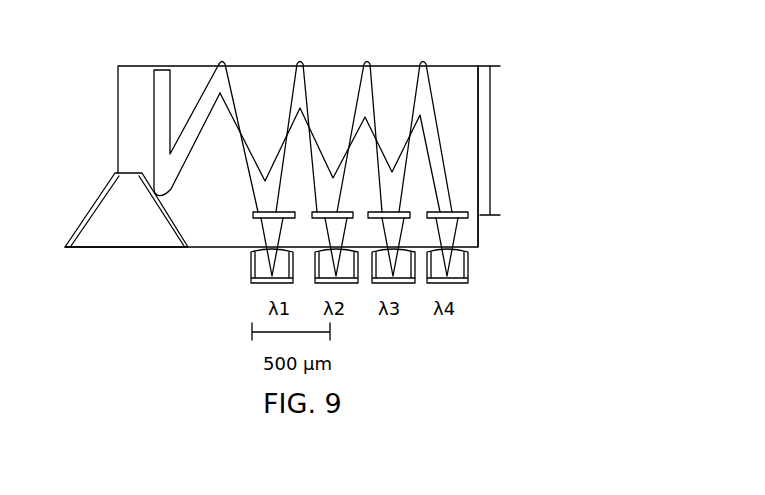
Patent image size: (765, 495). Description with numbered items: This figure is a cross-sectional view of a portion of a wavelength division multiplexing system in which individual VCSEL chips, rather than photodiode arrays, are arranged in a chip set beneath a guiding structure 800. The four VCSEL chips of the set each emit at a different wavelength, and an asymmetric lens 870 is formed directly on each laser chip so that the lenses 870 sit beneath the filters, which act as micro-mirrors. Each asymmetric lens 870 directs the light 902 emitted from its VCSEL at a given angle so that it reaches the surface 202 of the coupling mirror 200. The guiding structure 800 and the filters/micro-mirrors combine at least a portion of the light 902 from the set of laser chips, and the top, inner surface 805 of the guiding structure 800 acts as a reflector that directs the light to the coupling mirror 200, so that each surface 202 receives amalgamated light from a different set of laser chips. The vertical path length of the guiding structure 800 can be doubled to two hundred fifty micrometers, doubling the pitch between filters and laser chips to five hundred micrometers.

The guiding structure 800 is at (318, 126).
The top, inner surface 805 is at (455, 73).
The coupling mirror 200 is at (143, 231).
The surface 202 is at (168, 210).
The light 902 is at (373, 92).
The asymmetric lens 870 is at (294, 312).